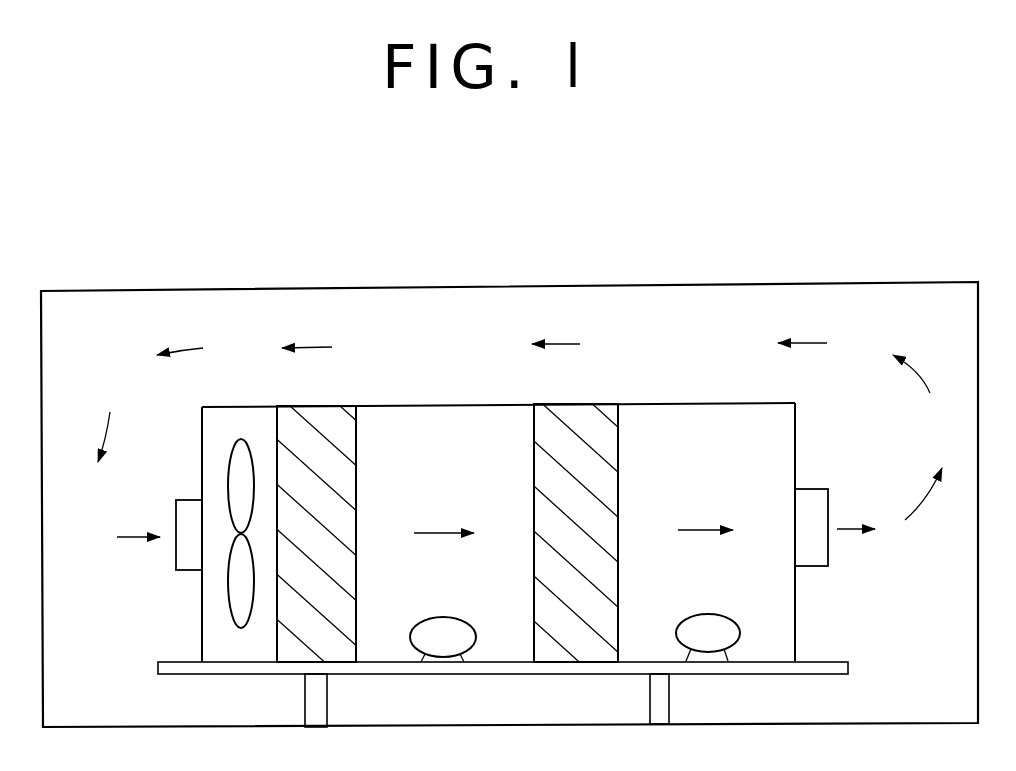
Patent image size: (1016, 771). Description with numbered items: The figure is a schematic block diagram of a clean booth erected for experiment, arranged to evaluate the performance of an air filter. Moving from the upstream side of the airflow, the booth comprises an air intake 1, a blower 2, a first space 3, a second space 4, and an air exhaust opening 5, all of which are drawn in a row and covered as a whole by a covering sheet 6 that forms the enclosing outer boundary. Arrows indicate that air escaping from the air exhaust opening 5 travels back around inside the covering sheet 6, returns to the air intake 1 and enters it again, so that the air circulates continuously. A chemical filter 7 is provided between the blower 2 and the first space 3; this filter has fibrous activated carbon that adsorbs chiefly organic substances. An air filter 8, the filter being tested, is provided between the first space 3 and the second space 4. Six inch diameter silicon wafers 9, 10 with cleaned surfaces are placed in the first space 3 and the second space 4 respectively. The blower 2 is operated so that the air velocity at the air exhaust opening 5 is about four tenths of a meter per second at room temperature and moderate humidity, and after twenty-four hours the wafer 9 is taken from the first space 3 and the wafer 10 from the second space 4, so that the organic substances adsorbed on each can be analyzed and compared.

The air intake 1 is at (192, 573).
The blower 2 is at (230, 473).
The first space 3 is at (432, 422).
The second space 4 is at (716, 420).
The air exhaust opening 5 is at (822, 567).
The covering sheet 6 is at (826, 281).
The chemical filter 7 is at (330, 420).
The air filter 8 is at (585, 423).
The silicon wafer 9 is at (452, 635).
The silicon wafer 10 is at (712, 620).